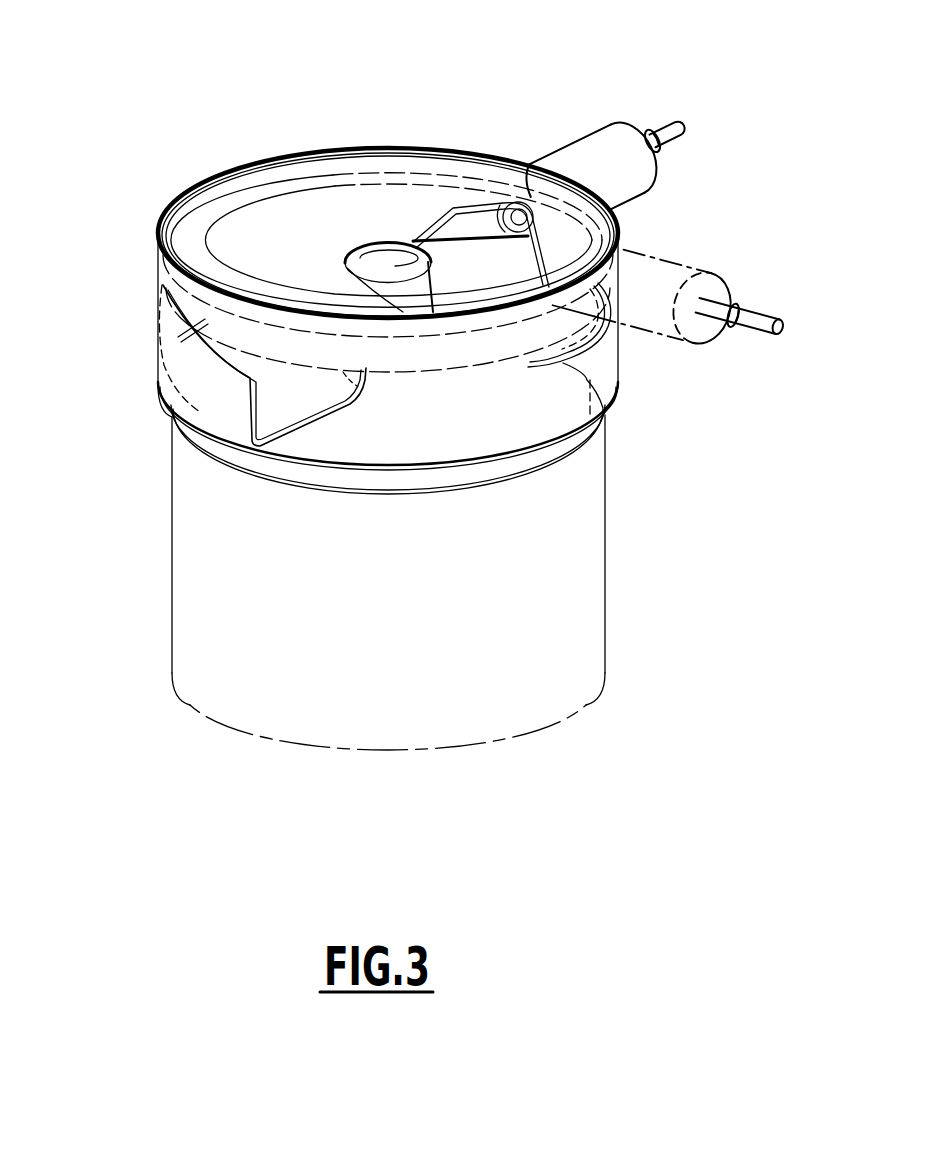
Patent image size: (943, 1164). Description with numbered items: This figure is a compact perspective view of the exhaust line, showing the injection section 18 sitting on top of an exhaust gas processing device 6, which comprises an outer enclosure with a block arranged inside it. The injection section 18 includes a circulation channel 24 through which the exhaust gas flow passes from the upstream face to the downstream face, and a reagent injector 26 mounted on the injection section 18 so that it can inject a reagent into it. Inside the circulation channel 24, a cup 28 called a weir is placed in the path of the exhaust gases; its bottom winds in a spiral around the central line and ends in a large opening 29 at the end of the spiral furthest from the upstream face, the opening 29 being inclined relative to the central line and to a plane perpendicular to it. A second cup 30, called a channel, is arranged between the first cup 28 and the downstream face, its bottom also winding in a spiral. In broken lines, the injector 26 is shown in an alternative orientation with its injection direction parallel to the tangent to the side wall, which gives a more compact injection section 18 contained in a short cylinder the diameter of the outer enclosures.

The exhaust gas processing device 6 is at (652, 553).
The injection section 18 is at (653, 238).
The circulation channel 24 is at (612, 374).
The reagent injector 26 is at (593, 150).
The cup (weir) 28 is at (260, 218).
The opening 29 is at (489, 205).
The second cup (channel) 30 is at (177, 362).